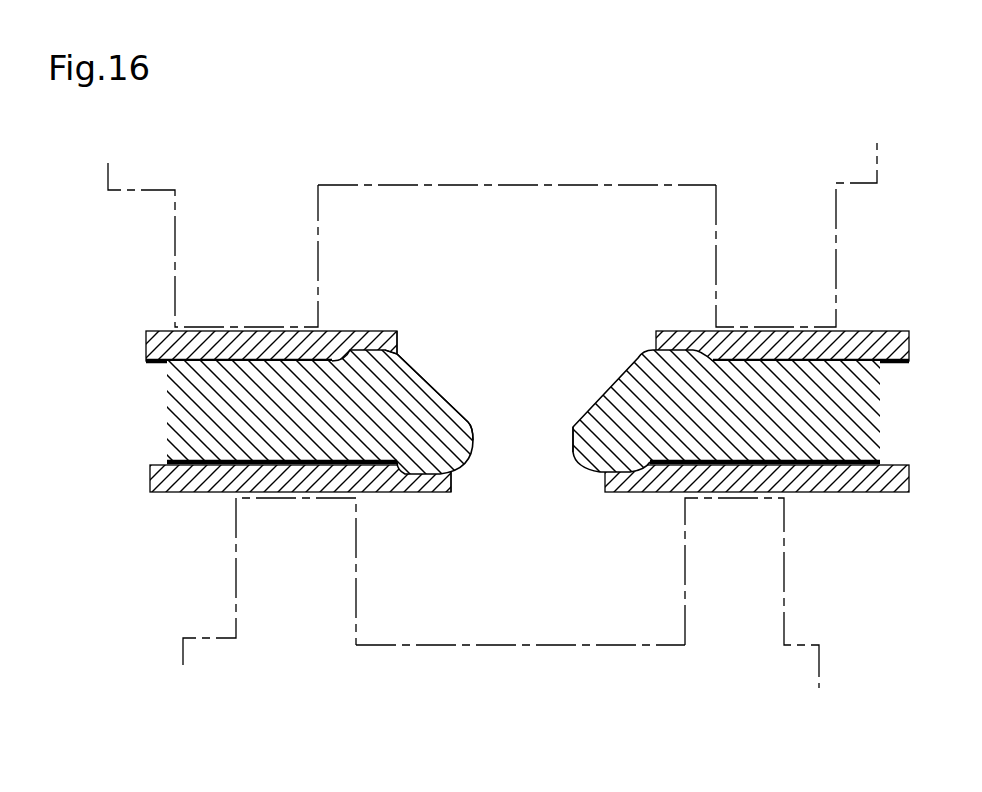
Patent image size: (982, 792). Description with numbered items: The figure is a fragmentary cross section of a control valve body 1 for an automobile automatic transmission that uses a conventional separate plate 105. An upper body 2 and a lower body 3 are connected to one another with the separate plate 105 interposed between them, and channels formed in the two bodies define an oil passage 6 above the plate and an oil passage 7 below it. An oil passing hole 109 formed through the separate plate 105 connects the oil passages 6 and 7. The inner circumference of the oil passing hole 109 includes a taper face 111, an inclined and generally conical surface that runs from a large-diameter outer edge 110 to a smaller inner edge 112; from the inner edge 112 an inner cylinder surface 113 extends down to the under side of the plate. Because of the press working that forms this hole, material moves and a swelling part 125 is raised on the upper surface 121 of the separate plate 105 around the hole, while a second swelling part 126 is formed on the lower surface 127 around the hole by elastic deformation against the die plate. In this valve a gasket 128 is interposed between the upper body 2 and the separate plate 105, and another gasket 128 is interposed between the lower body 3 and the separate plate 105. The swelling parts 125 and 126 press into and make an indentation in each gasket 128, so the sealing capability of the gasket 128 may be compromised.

The valve body 1 is at (488, 197).
The upper body 2 is at (173, 209).
The lower body 3 is at (218, 617).
The oil passage 6 is at (490, 215).
The oil passage 7 is at (520, 686).
The separate plate 105 is at (181, 418).
The oil passing hole 109 is at (546, 488).
The outer edge 110 is at (398, 352).
The taper face 111 is at (438, 387).
The inner edge 112 is at (473, 426).
The inner cylinder surface 113 is at (573, 450).
The upper surface 121 is at (285, 358).
The swelling part 125 is at (375, 355).
The swelling part 126 is at (436, 482).
The lower surface 127 is at (370, 475).
The gasket 128 is at (704, 332).